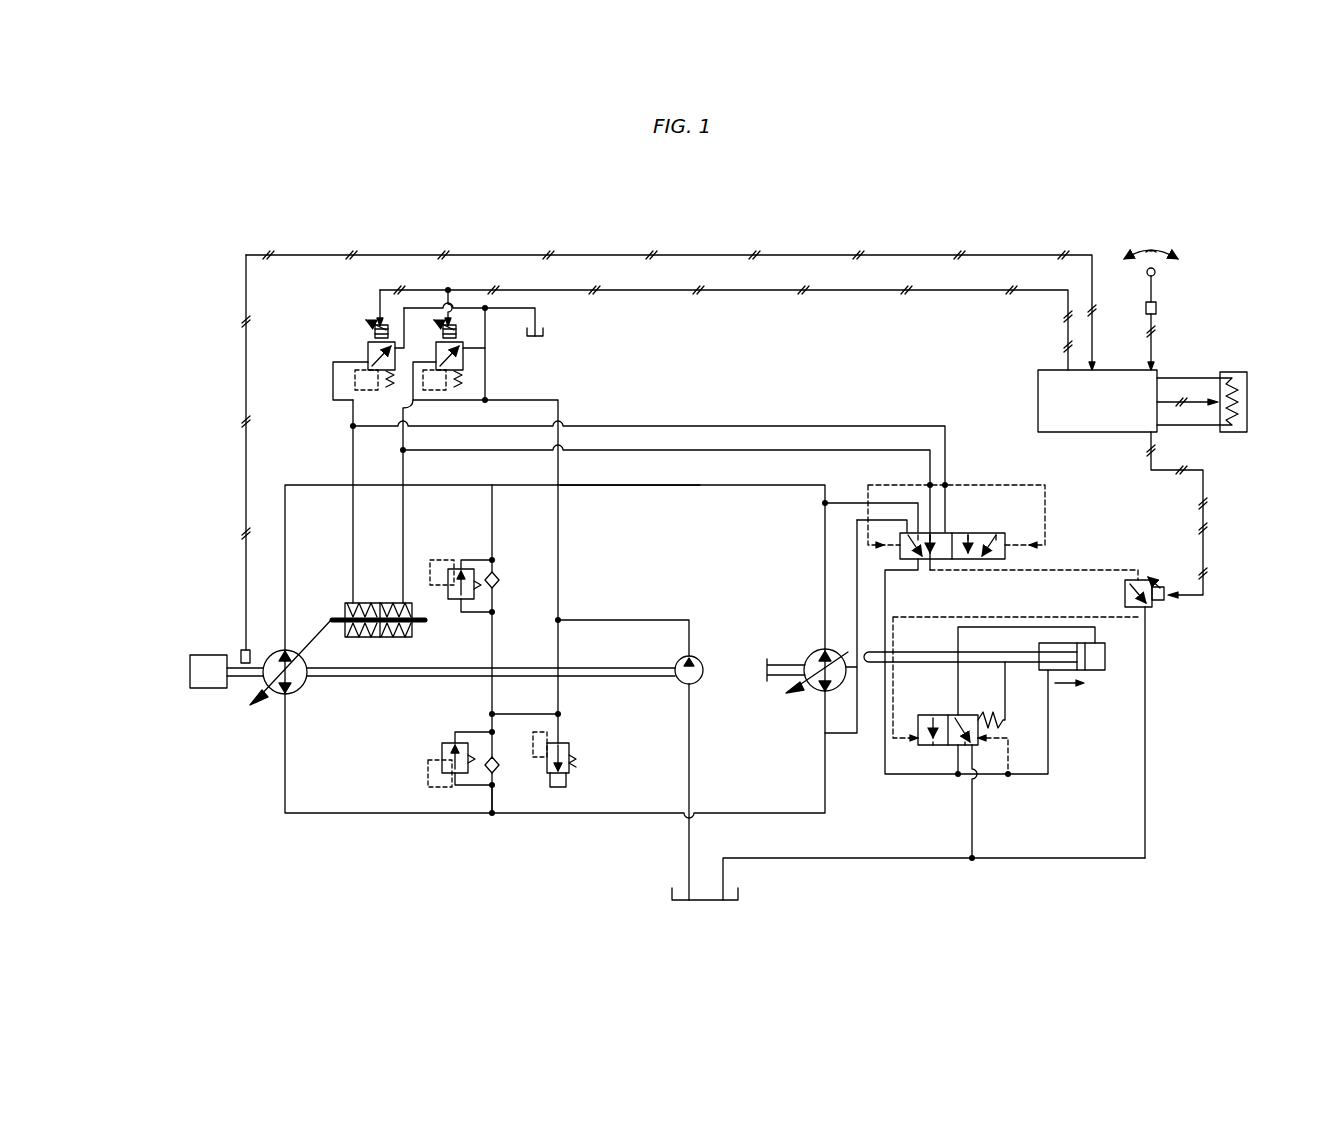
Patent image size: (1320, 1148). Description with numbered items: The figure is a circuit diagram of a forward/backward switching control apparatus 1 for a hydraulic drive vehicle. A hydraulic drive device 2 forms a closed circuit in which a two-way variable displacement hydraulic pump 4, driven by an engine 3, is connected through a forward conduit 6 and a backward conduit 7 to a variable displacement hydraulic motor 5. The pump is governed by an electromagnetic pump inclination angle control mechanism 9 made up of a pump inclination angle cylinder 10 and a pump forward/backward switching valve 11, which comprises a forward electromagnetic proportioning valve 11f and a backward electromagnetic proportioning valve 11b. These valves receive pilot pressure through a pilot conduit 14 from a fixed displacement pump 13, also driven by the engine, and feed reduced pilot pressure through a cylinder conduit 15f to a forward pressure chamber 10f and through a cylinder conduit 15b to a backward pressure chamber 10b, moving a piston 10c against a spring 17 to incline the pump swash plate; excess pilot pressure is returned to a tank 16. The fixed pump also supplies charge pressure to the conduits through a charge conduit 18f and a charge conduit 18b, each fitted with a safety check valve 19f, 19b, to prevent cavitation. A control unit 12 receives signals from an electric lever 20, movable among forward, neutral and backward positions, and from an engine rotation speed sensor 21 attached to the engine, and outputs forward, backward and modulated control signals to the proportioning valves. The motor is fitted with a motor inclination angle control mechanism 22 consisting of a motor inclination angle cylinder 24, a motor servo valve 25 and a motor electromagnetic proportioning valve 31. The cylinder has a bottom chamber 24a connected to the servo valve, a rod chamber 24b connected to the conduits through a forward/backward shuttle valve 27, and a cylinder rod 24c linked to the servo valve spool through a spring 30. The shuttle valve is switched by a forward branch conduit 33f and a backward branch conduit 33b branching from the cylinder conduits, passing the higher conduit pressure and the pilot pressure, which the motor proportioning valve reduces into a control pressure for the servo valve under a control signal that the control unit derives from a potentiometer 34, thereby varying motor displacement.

The forward/backward switching control apparatus 1 is at (703, 248).
The hydraulic drive device 2 is at (300, 820).
The engine 3 is at (190, 672).
The variable displacement hydraulic pump 4 is at (285, 655).
The variable displacement hydraulic motor 5 is at (810, 652).
The forward conduit 6 is at (700, 487).
The backward conduit 7 is at (336, 813).
The pump inclination angle control mechanism 9 is at (140, 283).
The pump inclination angle cylinder 10 is at (330, 605).
The backward pressure chamber 10b is at (412, 640).
The piston 10c is at (380, 603).
The forward pressure chamber 10f is at (346, 605).
The pump forward/backward switching valve 11 is at (187, 228).
The backward electromagnetic proportioning valve 11b is at (436, 343).
The forward electromagnetic proportioning valve 11f is at (368, 355).
The control unit 12 is at (1038, 402).
The fixed displacement pump 13 is at (703, 659).
The pilot conduit 14 is at (622, 620).
The cylinder conduit 15b is at (405, 470).
The cylinder conduit 15f is at (353, 456).
The tank 16 is at (543, 335).
The spring 17 is at (353, 640).
The charge conduit 18b is at (492, 797).
The charge conduit 18f is at (492, 521).
The safety check valve 19b is at (440, 757).
The safety check valve 19f is at (492, 571).
The electric lever 20 is at (1156, 309).
The engine rotation speed sensor 21 is at (243, 650).
The motor inclination angle control mechanism 22 is at (1195, 650).
The motor inclination angle cylinder 24 is at (1112, 665).
The bottom chamber 24a is at (1105, 655).
The rod chamber 24b is at (1039, 647).
The cylinder rod 24c is at (1002, 697).
The motor servo valve 25 is at (934, 746).
The forward/backward shuttle valve 27 is at (1000, 530).
The spring 30 is at (990, 713).
The motor electromagnetic proportioning valve 31 is at (1125, 596).
The backward branch conduit 33b is at (830, 455).
The forward branch conduit 33f is at (712, 426).
The potentiometer 34 is at (1247, 384).